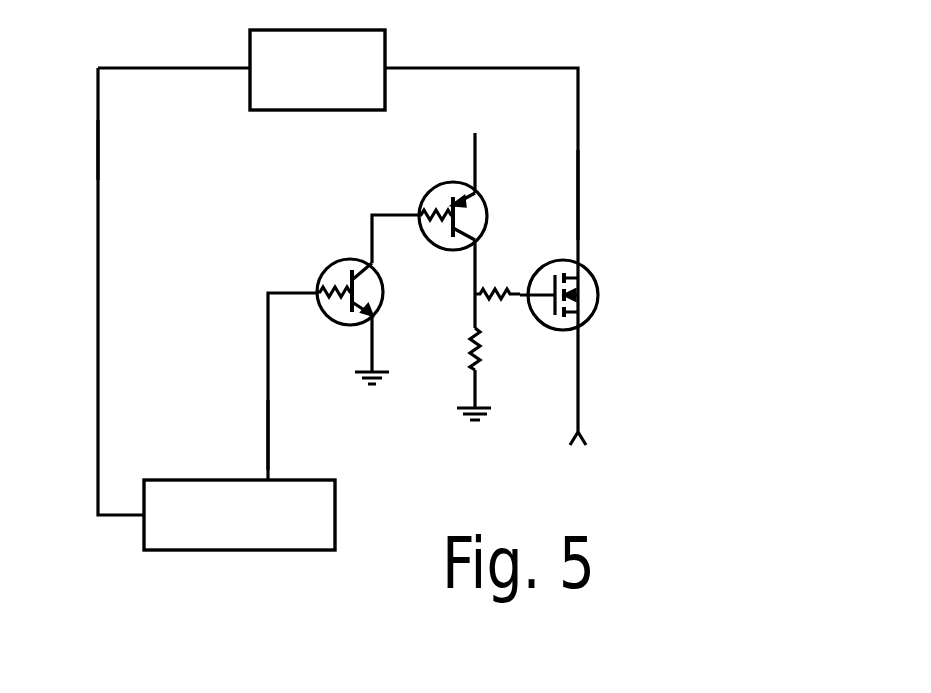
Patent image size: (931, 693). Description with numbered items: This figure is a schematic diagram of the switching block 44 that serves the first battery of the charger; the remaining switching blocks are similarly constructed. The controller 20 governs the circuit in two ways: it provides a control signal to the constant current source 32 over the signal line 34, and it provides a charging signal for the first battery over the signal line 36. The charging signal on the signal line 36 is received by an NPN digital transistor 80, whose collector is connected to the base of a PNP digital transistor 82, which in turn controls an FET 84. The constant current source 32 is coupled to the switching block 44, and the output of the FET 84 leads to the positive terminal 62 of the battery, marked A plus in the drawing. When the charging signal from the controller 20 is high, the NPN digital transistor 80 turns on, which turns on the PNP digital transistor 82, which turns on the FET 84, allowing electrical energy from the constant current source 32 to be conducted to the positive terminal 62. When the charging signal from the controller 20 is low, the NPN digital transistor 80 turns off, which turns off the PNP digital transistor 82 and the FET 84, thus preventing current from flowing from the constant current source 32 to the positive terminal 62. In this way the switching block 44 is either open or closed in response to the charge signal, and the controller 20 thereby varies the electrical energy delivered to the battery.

The controller 20 is at (247, 550).
The constant current source 32 is at (250, 42).
The signal line 34 is at (99, 148).
The signal line 36 is at (268, 442).
The switching block 44 is at (607, 190).
The positive terminal 62 is at (593, 452).
The NPN digital transistor 80 is at (362, 262).
The PNP digital transistor 82 is at (480, 193).
The FET 84 is at (597, 292).